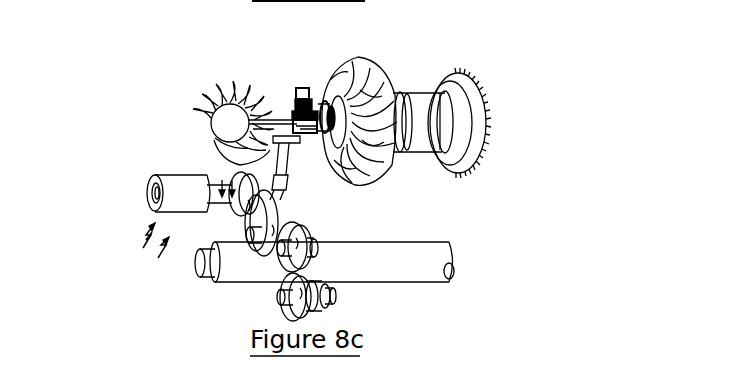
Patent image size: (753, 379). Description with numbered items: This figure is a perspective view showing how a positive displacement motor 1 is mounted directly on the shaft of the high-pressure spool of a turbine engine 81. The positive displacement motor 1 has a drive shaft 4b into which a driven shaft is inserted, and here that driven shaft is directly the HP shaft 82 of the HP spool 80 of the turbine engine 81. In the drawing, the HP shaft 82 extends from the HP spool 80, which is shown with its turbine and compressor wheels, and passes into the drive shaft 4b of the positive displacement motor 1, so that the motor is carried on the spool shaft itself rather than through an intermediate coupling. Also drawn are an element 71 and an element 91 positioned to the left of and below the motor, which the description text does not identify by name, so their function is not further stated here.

The positive displacement motor 1 is at (299, 83).
The drive shaft 4b is at (325, 97).
The HP shaft 82 is at (285, 105).
The HP spool 80 is at (345, 54).
The turbine engine 81 is at (445, 57).
The electric machine 71 is at (133, 194).
The rotor shaft 91 is at (191, 187).